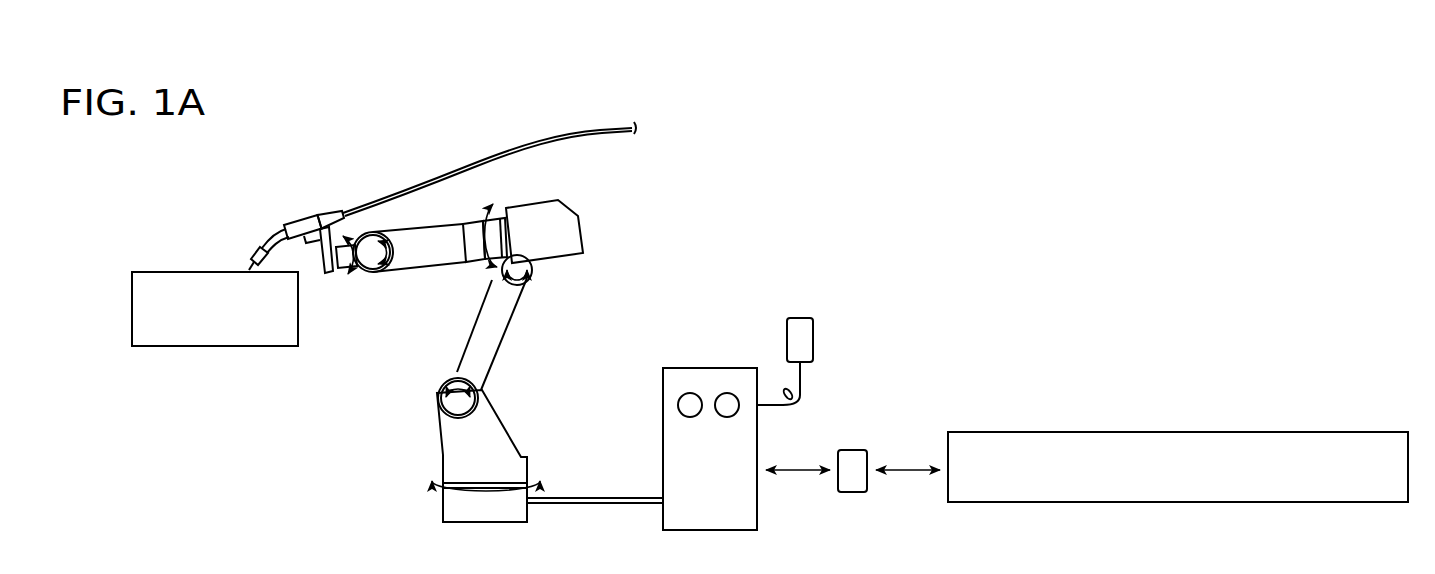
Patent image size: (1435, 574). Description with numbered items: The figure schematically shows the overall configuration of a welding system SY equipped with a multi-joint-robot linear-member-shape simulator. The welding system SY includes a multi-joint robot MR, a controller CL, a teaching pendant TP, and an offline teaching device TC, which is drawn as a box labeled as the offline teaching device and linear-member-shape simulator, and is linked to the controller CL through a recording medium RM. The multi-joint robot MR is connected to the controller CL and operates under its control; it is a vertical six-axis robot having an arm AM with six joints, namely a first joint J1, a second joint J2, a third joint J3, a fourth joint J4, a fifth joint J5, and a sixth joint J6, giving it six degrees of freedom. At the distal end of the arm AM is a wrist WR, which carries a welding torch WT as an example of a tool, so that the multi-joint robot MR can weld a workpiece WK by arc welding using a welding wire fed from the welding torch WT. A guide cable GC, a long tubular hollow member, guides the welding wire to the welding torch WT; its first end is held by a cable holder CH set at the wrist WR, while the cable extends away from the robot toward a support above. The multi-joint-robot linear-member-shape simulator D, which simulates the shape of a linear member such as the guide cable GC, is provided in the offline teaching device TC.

The welding system SY is at (848, 124).
The workpiece WK is at (216, 348).
The welding torch WT is at (256, 240).
The cable holder CH is at (330, 213).
The guide cable GC is at (463, 172).
The wrist WR is at (322, 266).
The arm AM is at (415, 270).
The multi-joint robot MR is at (601, 223).
The first joint J1 is at (547, 460).
The second joint J2 is at (507, 389).
The third joint J3 is at (546, 287).
The fourth joint J4 is at (505, 196).
The fifth joint J5 is at (378, 286).
The sixth joint J6 is at (357, 292).
The controller CL is at (690, 368).
The teaching pendant TP is at (803, 318).
The recording medium RM is at (852, 450).
The offline teaching device TC is at (1178, 438).
The multi-joint-robot linear-member-shape simulator D is at (1212, 432).